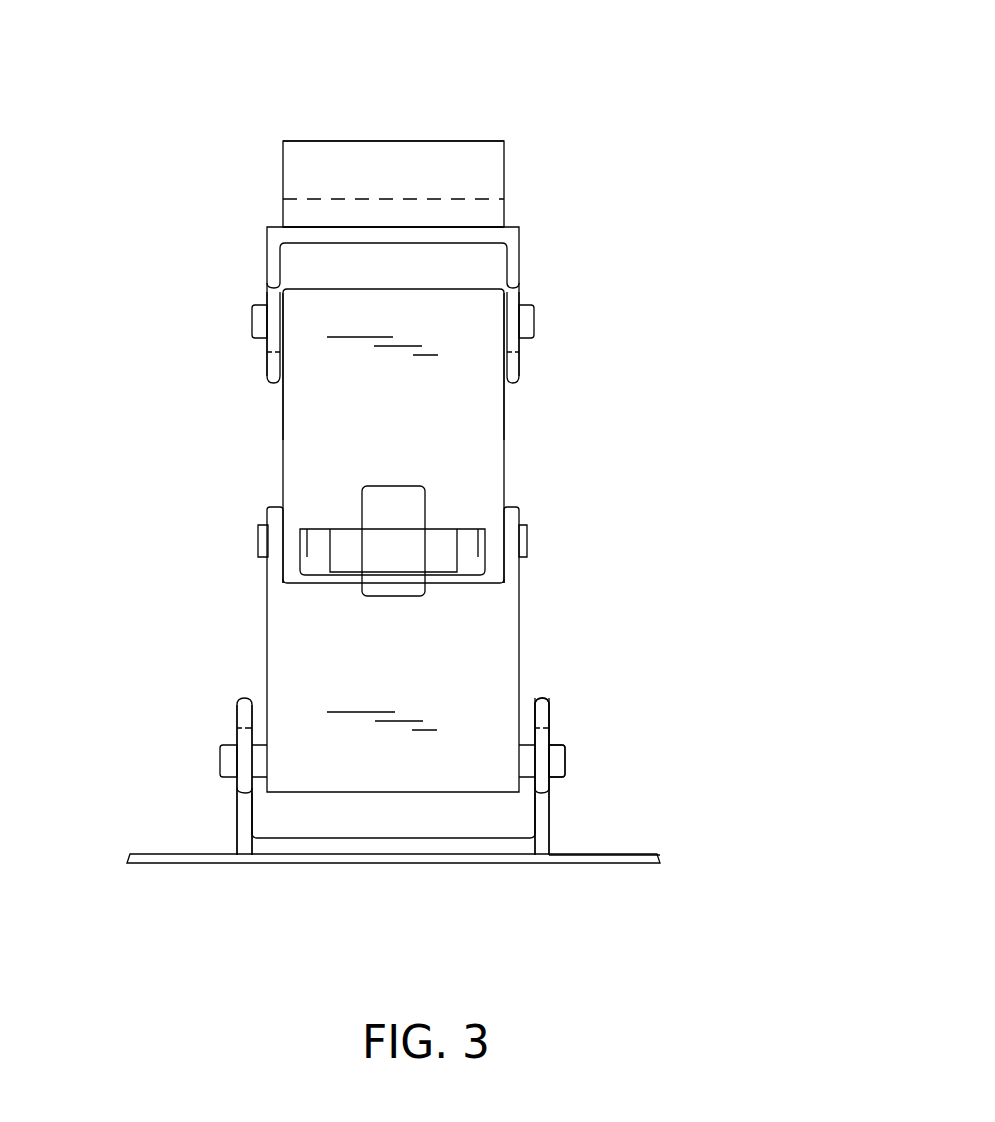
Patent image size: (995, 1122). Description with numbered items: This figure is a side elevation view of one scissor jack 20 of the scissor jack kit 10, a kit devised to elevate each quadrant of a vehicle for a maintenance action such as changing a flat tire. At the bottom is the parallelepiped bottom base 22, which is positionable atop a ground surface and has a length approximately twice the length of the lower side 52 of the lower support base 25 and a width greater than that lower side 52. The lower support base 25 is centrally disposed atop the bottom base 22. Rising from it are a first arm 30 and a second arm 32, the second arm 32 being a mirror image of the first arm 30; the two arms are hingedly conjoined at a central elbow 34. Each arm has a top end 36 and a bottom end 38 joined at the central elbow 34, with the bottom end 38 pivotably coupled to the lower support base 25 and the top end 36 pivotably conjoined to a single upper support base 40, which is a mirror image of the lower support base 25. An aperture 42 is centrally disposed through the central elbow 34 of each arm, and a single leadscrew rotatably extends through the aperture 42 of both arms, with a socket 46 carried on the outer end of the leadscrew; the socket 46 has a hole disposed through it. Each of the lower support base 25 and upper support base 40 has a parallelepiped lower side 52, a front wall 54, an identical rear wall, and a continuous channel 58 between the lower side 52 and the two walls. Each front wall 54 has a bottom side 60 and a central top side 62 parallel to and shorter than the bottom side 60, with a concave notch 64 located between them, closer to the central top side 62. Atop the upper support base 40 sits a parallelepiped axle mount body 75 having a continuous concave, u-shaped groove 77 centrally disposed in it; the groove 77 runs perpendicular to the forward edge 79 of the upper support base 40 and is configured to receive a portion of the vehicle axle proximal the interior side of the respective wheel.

The scissor jack kit 10 is at (145, 118).
The scissor jack 20 is at (505, 142).
The bottom base 22 is at (660, 858).
The lower support base 25 is at (550, 697).
The first arm 30 is at (505, 435).
The second arm 32 is at (523, 745).
The central elbow 34 is at (283, 548).
The top end 36 is at (307, 438).
The bottom end 38 is at (278, 637).
The upper support base 40 is at (267, 227).
The aperture 42 is at (457, 553).
The socket 46 is at (420, 489).
The lower side 52 is at (525, 850).
The front wall 54 is at (552, 707).
The continuous channel 58 is at (400, 827).
The bottom side 60 is at (552, 851).
The central top side 62 is at (547, 697).
The concave notch 64 is at (542, 760).
The axle mount body 75 is at (292, 163).
The groove 77 is at (460, 199).
The forward edge 79 is at (515, 227).